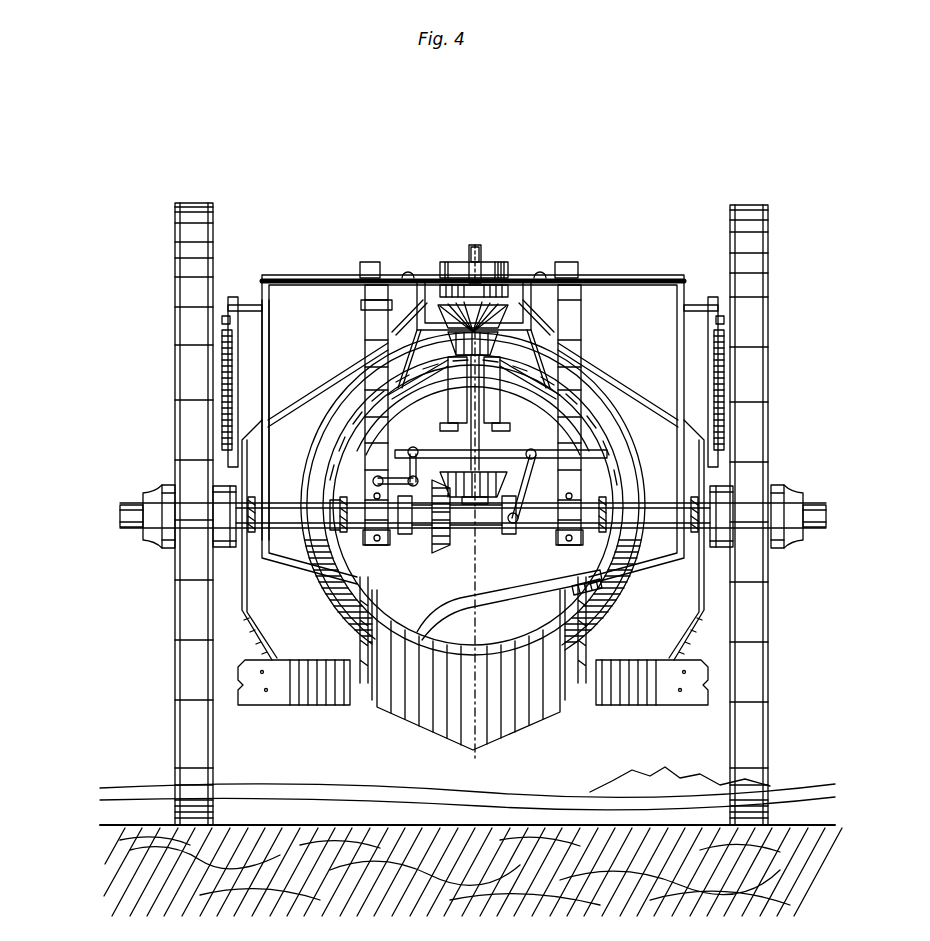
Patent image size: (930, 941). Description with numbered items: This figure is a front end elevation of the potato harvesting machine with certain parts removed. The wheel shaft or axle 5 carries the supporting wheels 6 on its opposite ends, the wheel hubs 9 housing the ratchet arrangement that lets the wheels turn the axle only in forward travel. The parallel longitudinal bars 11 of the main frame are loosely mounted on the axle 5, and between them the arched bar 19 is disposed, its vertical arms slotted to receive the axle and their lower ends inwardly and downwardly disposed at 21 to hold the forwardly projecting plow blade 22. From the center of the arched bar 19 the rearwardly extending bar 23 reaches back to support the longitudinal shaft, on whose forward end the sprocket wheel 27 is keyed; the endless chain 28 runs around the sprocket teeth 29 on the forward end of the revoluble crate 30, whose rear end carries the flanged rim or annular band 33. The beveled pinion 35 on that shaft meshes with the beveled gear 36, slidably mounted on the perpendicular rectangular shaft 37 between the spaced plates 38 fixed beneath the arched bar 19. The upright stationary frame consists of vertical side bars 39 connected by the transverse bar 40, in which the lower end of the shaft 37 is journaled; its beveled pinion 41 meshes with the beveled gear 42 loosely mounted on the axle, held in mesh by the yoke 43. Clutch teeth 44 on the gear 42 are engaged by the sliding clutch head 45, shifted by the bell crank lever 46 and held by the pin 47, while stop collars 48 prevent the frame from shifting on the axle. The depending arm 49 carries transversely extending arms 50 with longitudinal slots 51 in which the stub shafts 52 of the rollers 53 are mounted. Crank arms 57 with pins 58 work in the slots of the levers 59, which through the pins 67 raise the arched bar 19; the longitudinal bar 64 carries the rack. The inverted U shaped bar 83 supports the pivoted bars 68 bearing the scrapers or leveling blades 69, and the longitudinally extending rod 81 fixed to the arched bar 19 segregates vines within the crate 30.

The wheel shaft or axle 5 is at (478, 245).
The supporting wheels 6 is at (175, 660).
The wheel hubs 9 is at (222, 500).
The longitudinal bars of the main frame 11 is at (270, 474).
The arched bar 19 is at (473, 463).
The inwardly and downwardly disposed lower ends 21 is at (330, 606).
The plow blade or digger 22 is at (432, 726).
The longitudinally and rearwardly extending bar 23 is at (492, 266).
The sprocket wheel 27 is at (545, 332).
The endless chain 28 is at (562, 344).
The sprocket teeth 29 is at (592, 364).
The revoluble crate 30 is at (627, 430).
The flanged rim or annular band 33 is at (586, 402).
The beveled pinion 35 is at (450, 346).
The beveled gear 36 is at (462, 300).
The perpendicular rectangular shaft 37 is at (479, 262).
The spaced plates 38 is at (383, 318).
The vertical side bars 39 is at (366, 270).
The transverse bar 40 is at (500, 438).
The beveled pinion 41 is at (528, 492).
The beveled gear 42 is at (430, 546).
The yoke 43 is at (398, 538).
The clutch teeth 44 is at (470, 506).
The sliding clutch head 45 is at (512, 537).
The bell crank lever 46 is at (613, 446).
The pin 47 is at (602, 457).
The stop collars 48 is at (340, 502).
The depending arm 49 is at (442, 396).
The transversely extending arms 50 is at (446, 432).
The longitudinal slots 51 is at (394, 404).
The stub shafts 52 is at (350, 434).
The rollers 53 is at (386, 402).
The crank arms 57 is at (232, 402).
The pins 58 is at (232, 336).
The levers 59 is at (233, 296).
The longitudinal bar 64 is at (336, 540).
The pins 67 is at (264, 310).
The bars 68 is at (247, 592).
The scrapers or leveling blades 69 is at (276, 706).
The longitudinally extending rod 81 is at (480, 613).
The inverted U shaped bar 83 is at (352, 354).